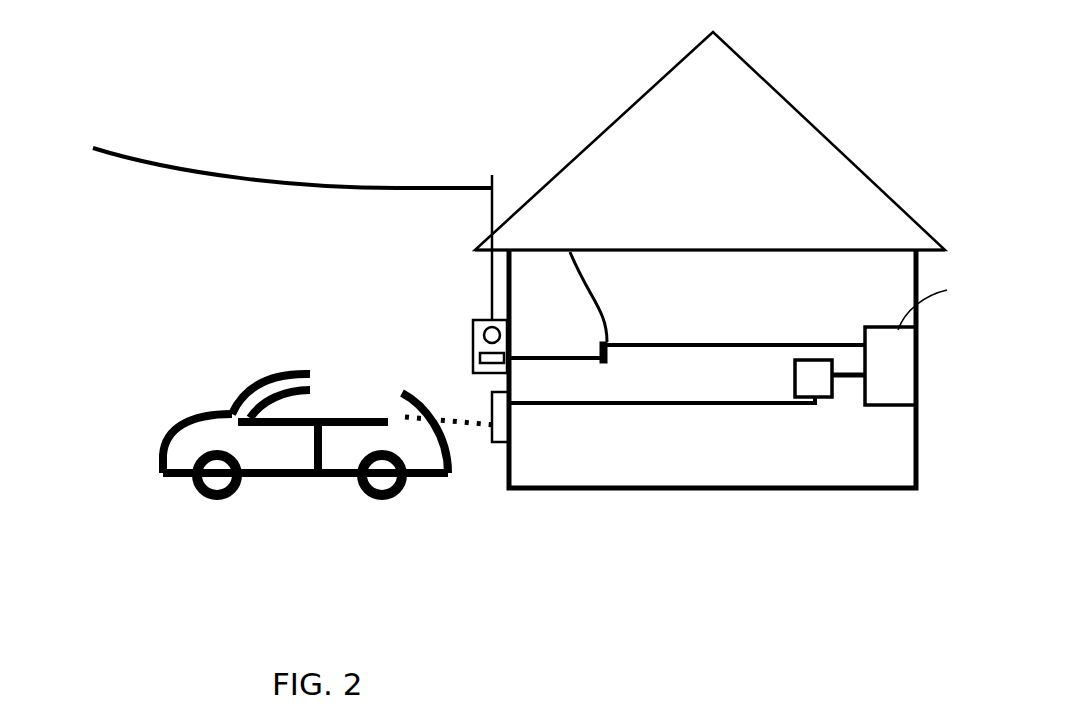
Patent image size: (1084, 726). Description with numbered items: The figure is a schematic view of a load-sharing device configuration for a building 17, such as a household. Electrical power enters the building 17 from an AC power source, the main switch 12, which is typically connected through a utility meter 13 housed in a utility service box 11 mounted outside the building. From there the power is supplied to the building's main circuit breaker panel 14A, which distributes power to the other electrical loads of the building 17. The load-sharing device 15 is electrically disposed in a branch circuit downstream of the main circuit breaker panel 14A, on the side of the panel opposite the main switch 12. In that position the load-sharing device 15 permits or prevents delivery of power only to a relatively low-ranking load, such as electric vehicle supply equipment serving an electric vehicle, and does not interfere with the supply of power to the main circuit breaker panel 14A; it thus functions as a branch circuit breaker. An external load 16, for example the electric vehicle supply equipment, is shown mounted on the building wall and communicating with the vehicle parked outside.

The utility service box 11 is at (478, 320).
The main switch (AC power supply) 12 is at (473, 355).
The utility meter 13 is at (473, 337).
The main circuit breaker panel 14A is at (625, 233).
The load-sharing device 15 is at (607, 350).
The external load 16 is at (497, 443).
The building 17 is at (592, 100).